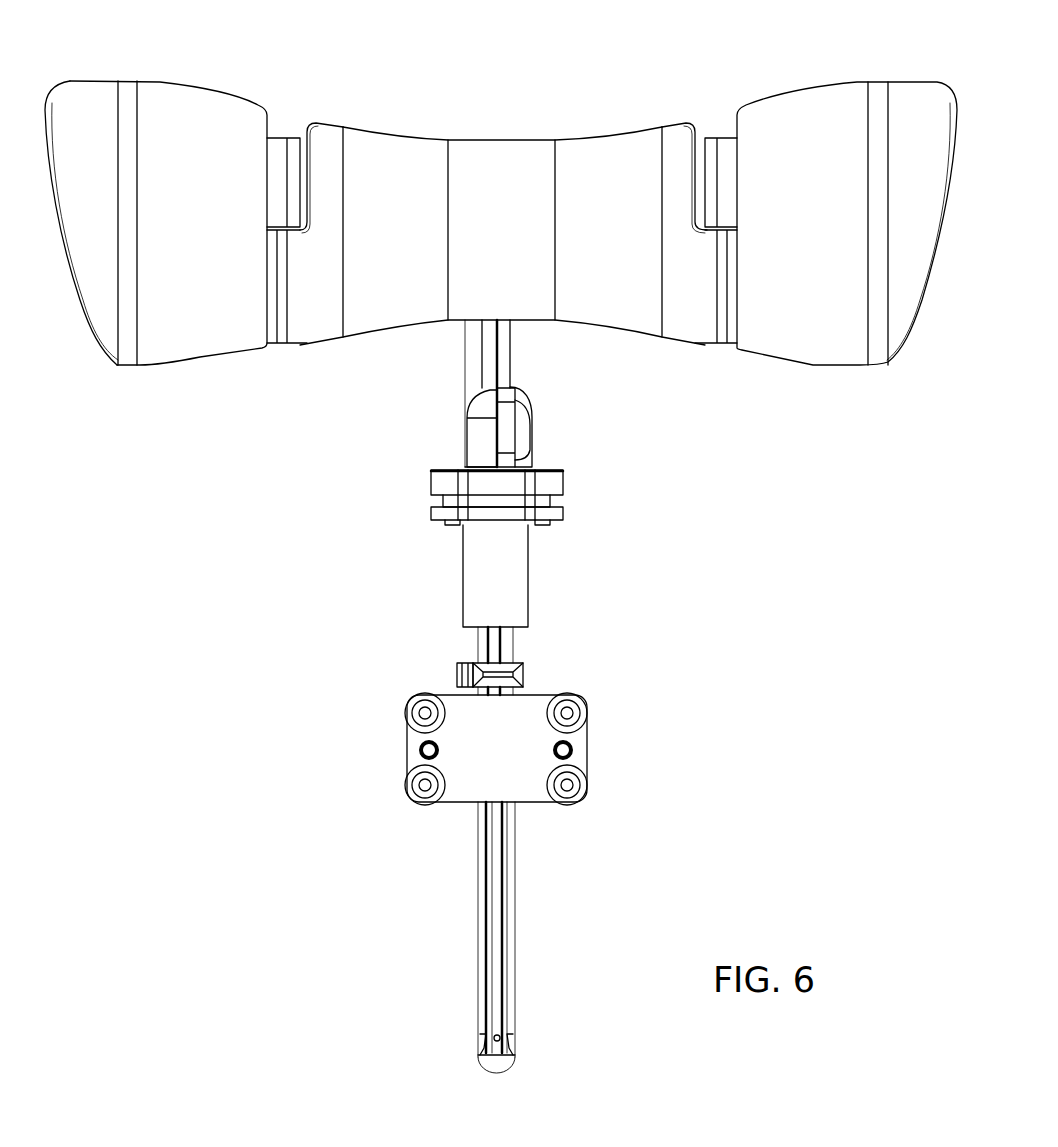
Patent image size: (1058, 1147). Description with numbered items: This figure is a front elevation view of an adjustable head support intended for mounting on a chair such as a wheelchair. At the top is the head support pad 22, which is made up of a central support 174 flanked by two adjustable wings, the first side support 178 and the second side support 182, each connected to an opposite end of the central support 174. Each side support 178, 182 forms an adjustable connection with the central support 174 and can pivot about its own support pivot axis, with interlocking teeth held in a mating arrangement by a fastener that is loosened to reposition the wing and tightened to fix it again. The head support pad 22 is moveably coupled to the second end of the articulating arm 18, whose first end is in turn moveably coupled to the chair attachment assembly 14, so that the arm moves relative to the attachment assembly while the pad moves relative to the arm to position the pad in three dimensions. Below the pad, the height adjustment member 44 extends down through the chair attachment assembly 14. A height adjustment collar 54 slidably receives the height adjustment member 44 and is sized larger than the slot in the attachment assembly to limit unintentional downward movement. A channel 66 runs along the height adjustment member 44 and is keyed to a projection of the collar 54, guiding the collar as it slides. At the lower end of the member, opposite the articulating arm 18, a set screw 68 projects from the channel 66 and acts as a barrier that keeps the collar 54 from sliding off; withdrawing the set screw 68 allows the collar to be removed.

The head support pad 22 is at (443, 106).
The second side support plate 182 is at (173, 173).
The first side support plate 178 is at (787, 198).
The central support 174 is at (513, 195).
The articulating arm 18 is at (578, 413).
The height adjustment collar 54 is at (522, 668).
The chair attachment assembly 14 is at (640, 748).
The height adjustment member 44 is at (478, 850).
The channel 66 is at (498, 912).
The set screw 68 is at (500, 1038).